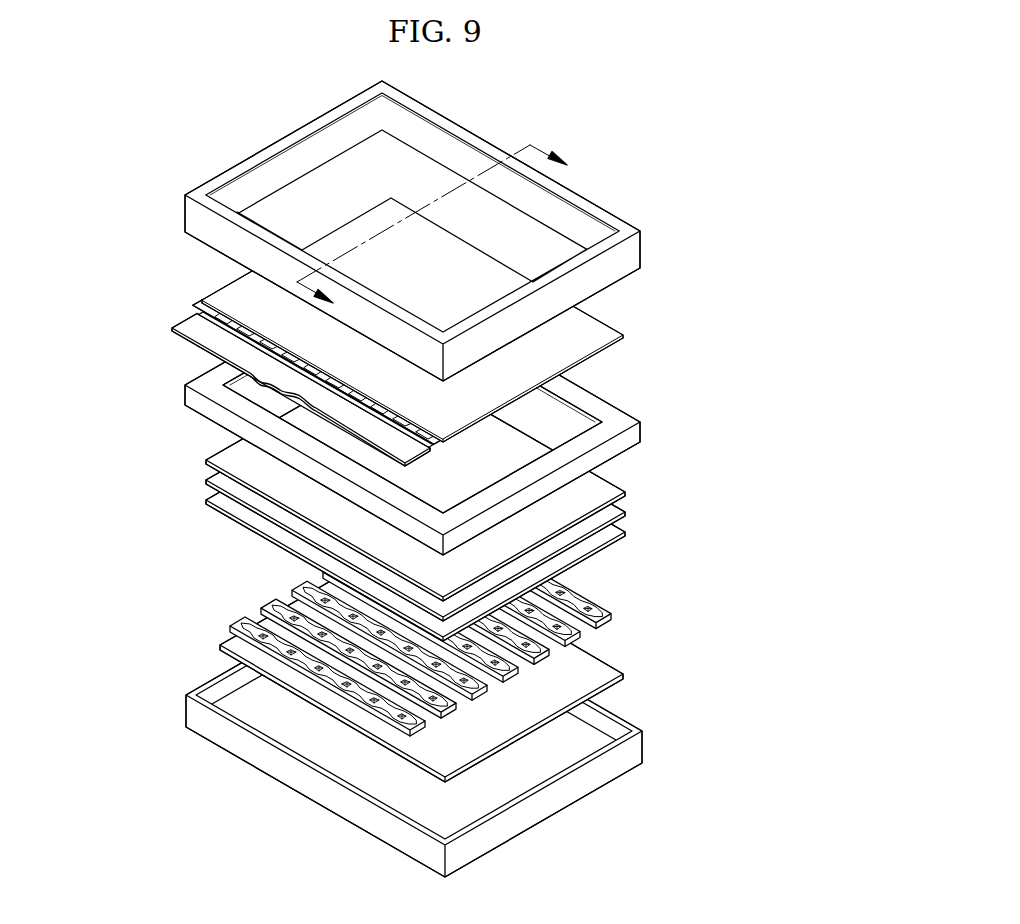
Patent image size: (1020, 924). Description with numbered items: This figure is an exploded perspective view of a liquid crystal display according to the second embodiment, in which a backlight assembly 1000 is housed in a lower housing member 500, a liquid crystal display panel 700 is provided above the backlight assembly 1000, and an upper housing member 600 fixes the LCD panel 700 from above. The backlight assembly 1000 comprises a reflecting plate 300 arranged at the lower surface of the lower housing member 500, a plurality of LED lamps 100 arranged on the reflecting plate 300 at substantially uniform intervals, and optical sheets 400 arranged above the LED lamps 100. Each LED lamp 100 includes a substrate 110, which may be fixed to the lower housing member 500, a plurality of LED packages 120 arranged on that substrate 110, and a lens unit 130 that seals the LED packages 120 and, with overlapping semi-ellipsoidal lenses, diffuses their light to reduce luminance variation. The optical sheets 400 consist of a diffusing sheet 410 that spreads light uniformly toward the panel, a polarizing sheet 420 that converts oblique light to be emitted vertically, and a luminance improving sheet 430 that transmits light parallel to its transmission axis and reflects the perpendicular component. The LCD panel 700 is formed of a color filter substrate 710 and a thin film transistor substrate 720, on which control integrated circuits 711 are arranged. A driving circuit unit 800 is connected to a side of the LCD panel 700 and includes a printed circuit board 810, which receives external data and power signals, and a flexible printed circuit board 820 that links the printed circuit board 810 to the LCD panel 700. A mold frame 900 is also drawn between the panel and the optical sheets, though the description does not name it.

The backlight assembly 1000 is at (770, 494).
The LED lamp 100 is at (730, 564).
The substrate 110 is at (612, 618).
The LED package 120 is at (592, 608).
The lens unit 130 is at (580, 600).
The reflecting plate 300 is at (624, 673).
The optical sheets 400 is at (730, 492).
The diffusing sheet 410 is at (626, 534).
The polarizing sheet 420 is at (626, 514).
The luminance improving sheet 430 is at (626, 495).
The lower housing member 500 is at (637, 743).
The upper housing member 600 is at (641, 256).
The liquid crystal display panel 700 is at (710, 317).
The color filter substrate 710 is at (623, 334).
The control integrated circuits 711 is at (222, 303).
The thin film transistor substrate 720 is at (623, 338).
The driving circuit unit 800 is at (98, 308).
The printed circuit board 810 is at (190, 332).
The flexible printed circuit board 820 is at (212, 316).
The mold frame 900 is at (641, 428).